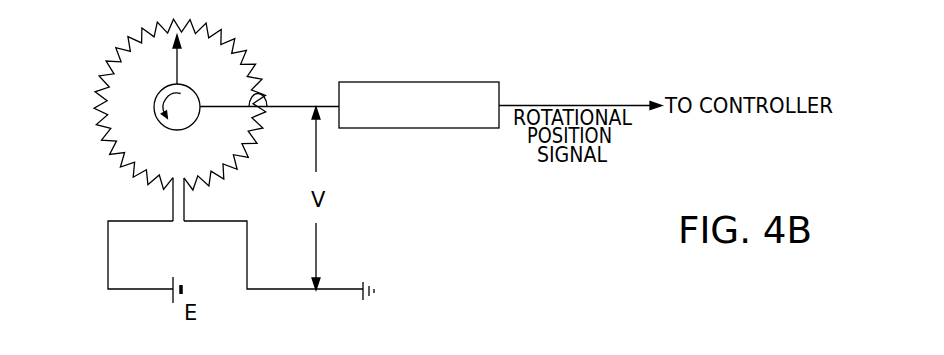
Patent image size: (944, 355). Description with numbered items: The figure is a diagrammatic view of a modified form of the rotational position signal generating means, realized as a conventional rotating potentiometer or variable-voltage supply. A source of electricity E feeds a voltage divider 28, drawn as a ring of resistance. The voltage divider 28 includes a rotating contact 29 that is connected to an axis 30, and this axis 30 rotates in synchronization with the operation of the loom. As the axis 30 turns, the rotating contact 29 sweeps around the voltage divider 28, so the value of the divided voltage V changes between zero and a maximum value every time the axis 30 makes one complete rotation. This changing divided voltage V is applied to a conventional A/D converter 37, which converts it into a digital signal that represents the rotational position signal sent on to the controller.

The voltage divider 28 is at (141, 102).
The rotating contact 29 is at (179, 68).
The axis 30 is at (190, 117).
The A/D converter 37 is at (411, 82).